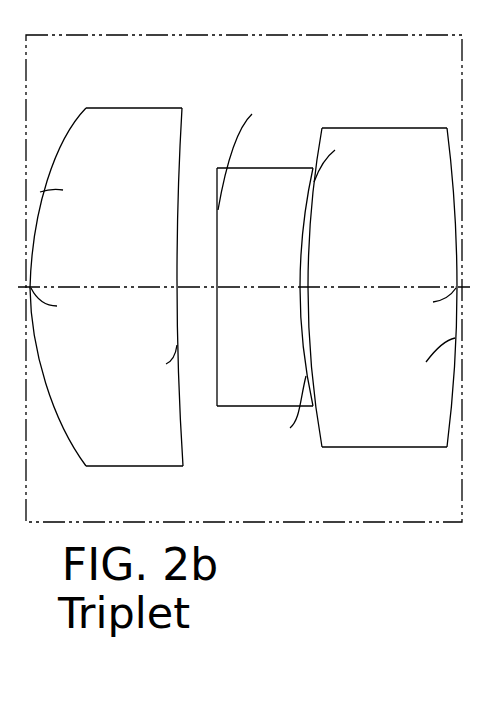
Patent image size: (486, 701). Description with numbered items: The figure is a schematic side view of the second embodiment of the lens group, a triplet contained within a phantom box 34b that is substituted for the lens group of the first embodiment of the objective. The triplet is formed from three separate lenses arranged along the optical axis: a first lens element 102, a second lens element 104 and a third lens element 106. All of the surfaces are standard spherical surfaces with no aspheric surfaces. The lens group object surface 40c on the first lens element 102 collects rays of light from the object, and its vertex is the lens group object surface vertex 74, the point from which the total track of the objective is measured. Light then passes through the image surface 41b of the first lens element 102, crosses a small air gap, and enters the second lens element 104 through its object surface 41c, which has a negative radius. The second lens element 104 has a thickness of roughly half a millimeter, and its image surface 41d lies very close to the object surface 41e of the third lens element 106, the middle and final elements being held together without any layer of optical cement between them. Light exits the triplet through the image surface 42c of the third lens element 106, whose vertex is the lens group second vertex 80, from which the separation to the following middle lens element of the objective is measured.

The phantom box 34b is at (229, 32).
The first lens element 102 is at (106, 295).
The second lens element 104 is at (273, 270).
The third lens element 106 is at (382, 287).
The lens group object surface 40c is at (65, 436).
The image surface of first lens element 41b is at (176, 252).
The object surface of second lens element 41c is at (218, 241).
The image surface of second lens element 41d is at (300, 331).
The object surface of third lens element 41e is at (309, 266).
The image surface of third lens element 42c is at (452, 192).
The lens group object surface vertex 74 is at (31, 288).
The lens group second vertex 80 is at (456, 287).